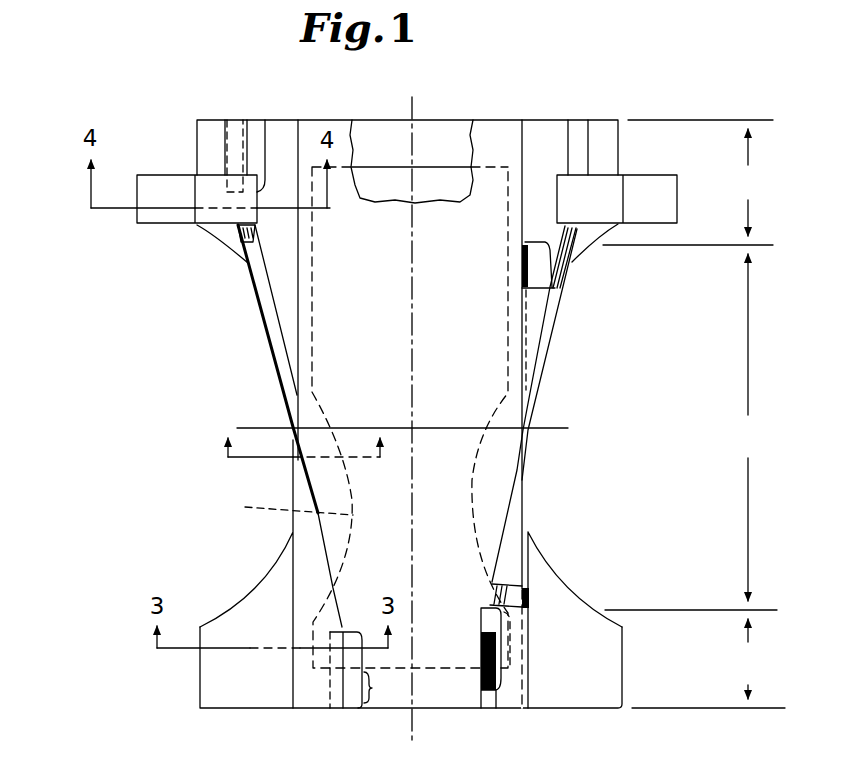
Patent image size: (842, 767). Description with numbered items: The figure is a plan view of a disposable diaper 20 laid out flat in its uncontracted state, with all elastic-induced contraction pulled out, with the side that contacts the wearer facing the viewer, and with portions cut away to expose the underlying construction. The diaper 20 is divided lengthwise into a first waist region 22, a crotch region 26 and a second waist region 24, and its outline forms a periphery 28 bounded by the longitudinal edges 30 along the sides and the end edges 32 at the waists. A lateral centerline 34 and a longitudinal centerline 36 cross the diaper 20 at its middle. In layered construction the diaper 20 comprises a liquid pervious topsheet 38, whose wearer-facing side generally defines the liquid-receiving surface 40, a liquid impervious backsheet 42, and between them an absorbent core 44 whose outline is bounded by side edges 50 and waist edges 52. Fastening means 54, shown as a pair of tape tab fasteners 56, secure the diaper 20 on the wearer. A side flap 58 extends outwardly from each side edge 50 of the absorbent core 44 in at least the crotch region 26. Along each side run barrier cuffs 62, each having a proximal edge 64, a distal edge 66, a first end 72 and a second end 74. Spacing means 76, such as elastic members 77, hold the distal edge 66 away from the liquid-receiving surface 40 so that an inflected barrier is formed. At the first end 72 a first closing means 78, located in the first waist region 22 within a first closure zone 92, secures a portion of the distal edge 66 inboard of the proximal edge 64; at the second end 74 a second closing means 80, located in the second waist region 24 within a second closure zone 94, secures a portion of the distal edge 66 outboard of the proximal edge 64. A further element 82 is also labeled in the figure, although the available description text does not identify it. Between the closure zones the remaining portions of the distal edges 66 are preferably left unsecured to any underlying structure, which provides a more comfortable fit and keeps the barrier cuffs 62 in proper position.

The diaper 20 is at (127, 283).
The first waist region 22 is at (695, 659).
The second waist region 24 is at (688, 182).
The crotch region 26 is at (751, 427).
The periphery 28 is at (233, 610).
The longitudinal edges 30 is at (280, 553).
The end edges 32 is at (484, 120).
The lateral centerline 34 is at (268, 428).
The longitudinal centerline 36 is at (415, 718).
The topsheet 38 is at (258, 702).
The liquid-receiving surface 40 is at (338, 309).
The backsheet 42 is at (433, 125).
The absorbent core 44 is at (376, 195).
The side edges 50 is at (281, 508).
The waist edges 52 is at (365, 167).
The fastening means 54 is at (178, 167).
The tape tab fasteners 56 is at (170, 202).
The side flap 58 is at (290, 485).
The barrier cuffs 62 is at (266, 305).
The proximal edge 64 is at (520, 346).
The distal edge 66 is at (505, 510).
The first end 72 is at (310, 697).
The second end 74 is at (545, 125).
The spacing means 76 is at (568, 292).
The elastic members 77 is at (568, 280).
The first closing means 78 is at (487, 640).
The second closing means 80 is at (232, 120).
The feather seal 82 is at (530, 597).
The first closure zone 92 is at (365, 670).
The second closure zone 94 is at (277, 156).